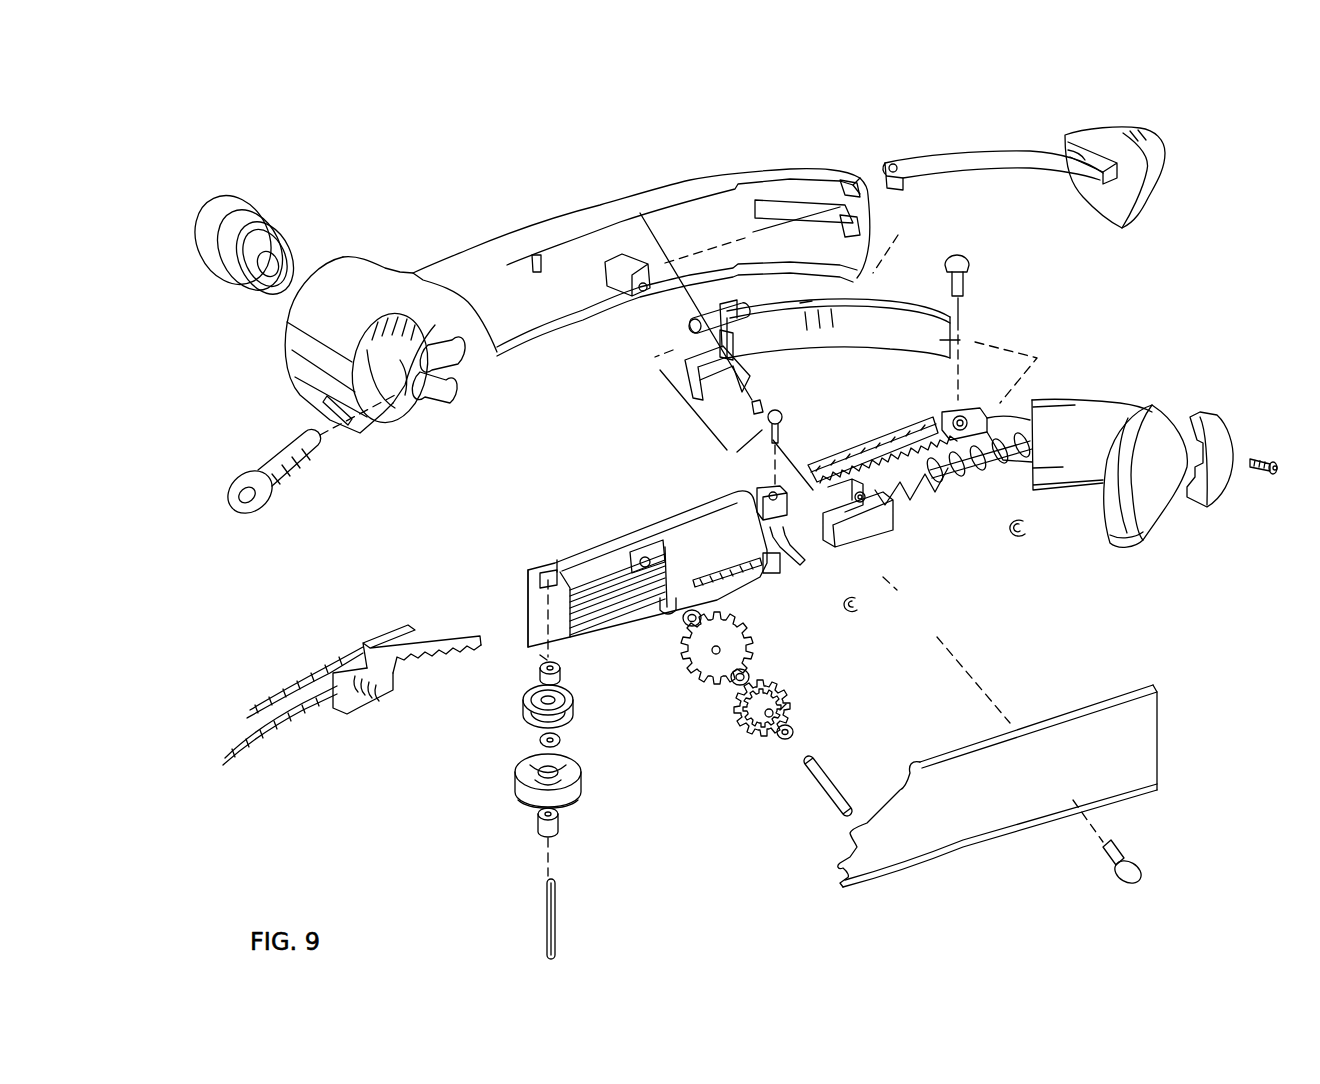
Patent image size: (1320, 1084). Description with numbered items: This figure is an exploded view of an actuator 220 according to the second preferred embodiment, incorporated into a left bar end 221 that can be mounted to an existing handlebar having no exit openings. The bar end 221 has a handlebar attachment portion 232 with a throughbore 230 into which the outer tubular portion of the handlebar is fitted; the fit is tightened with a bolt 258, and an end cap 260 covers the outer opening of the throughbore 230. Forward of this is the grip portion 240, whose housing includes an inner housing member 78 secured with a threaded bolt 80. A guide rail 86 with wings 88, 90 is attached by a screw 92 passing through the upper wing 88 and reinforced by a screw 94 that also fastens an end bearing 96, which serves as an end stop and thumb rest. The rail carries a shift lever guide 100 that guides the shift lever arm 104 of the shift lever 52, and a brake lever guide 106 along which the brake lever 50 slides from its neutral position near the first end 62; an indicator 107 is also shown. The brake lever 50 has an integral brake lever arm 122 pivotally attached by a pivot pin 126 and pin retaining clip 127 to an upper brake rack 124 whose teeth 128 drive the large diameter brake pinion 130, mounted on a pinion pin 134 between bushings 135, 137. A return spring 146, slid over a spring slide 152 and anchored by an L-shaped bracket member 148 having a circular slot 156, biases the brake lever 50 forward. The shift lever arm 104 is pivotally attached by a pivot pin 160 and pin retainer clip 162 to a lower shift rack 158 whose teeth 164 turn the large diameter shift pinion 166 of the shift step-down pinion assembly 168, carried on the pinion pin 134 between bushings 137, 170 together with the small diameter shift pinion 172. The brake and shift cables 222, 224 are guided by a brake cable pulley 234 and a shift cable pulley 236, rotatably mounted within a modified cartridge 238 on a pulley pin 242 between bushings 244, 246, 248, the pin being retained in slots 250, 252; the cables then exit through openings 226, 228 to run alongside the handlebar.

The brake lever 50 is at (1162, 492).
The shift lever 52 is at (1153, 153).
The first end 62 is at (1233, 455).
The inner housing member 78 is at (963, 825).
The threaded bolt 80 is at (1123, 847).
The guide rail 86 is at (853, 337).
The upper wing 88 is at (693, 312).
The wing 90 is at (683, 387).
The screw 92 is at (760, 400).
The screw 94 is at (1280, 468).
The end bearing 96 is at (1213, 487).
The shift lever guide 100 is at (918, 306).
The shift lever arm 104 is at (955, 150).
The brake lever guide 106 is at (1003, 328).
The indicator 107 is at (807, 302).
The brake lever arm 122 is at (1020, 422).
The upper brake rack 124 is at (880, 450).
The pivot pin 126 is at (967, 280).
The pin retaining clip 127 is at (1033, 530).
The teeth 128 is at (907, 462).
The large diameter brake pinion 130 is at (740, 650).
The pinion pin 134 is at (810, 787).
The bushing 135 is at (683, 620).
The bushing 137 is at (730, 680).
The return spring 146 is at (980, 467).
The L-shaped bracket member 148 is at (873, 523).
The spring slide 152 is at (967, 473).
The circular slot 156 is at (855, 496).
The lower shift rack 158 is at (845, 598).
The pivot pin 160 is at (762, 487).
The pin retainer clip 162 is at (927, 625).
The teeth 164 is at (773, 568).
The large diameter shift pinion 166 is at (733, 707).
The shift step-down pinion assembly 168 is at (760, 747).
The bushing 170 is at (800, 720).
The small diameter shift pinion 172 is at (782, 708).
The actuator 220 is at (640, 166).
The left bar end 221 is at (743, 160).
The brake cable 222 is at (260, 752).
The shift cable 224 is at (320, 665).
The opening 226 is at (433, 403).
The opening 228 is at (457, 367).
The throughbore 230 is at (403, 380).
The handlebar attachment portion 232 is at (363, 290).
The brake cable pulley 234 is at (583, 780).
The shift cable pulley 236 is at (574, 702).
The cartridge 238 is at (715, 517).
The grip portion 240 is at (540, 213).
The pulley pin 242 is at (557, 915).
The bushing 244 is at (562, 668).
The bushing 246 is at (561, 741).
The bushing 248 is at (560, 821).
The slot 250 is at (562, 563).
The slot 252 is at (543, 656).
The bolt 258 is at (278, 483).
The end cap 260 is at (203, 222).